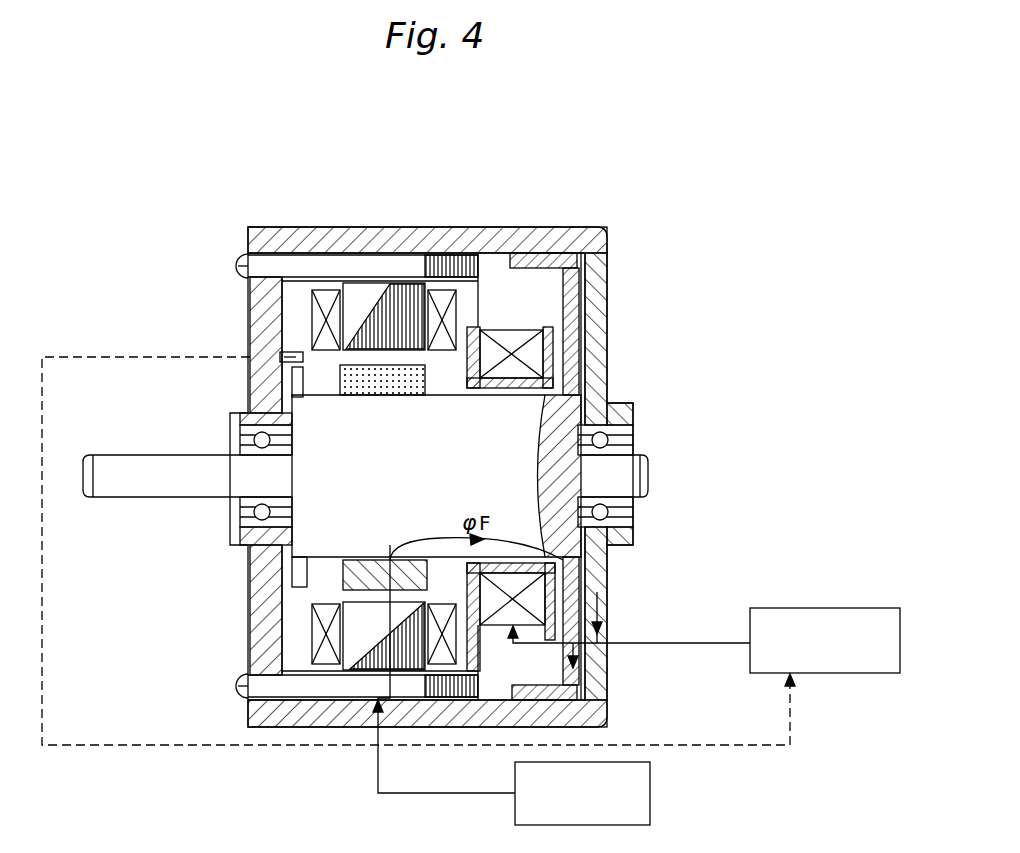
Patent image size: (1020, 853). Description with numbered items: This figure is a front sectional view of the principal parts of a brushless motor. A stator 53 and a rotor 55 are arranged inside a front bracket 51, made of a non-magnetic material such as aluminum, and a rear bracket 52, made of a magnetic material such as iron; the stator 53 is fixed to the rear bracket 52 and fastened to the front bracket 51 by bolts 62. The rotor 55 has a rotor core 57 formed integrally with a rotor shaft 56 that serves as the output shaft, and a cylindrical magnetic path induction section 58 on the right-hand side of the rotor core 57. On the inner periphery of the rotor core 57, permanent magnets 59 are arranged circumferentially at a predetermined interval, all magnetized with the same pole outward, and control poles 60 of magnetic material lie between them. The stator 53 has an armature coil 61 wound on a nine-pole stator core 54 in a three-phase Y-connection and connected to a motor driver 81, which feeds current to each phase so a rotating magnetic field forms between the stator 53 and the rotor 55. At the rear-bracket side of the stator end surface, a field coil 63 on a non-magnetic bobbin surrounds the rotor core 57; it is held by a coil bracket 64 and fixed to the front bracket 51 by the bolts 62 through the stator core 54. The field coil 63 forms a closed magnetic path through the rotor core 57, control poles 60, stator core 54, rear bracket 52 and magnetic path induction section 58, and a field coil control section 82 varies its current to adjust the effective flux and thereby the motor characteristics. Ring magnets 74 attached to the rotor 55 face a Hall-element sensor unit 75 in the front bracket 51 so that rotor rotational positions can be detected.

The front bracket 51 is at (252, 302).
The rear bracket 52 is at (496, 236).
The stator 53 is at (362, 638).
The stator core 54 is at (355, 296).
The rotor 55 is at (318, 515).
The rotor shaft 56 is at (108, 497).
The rotor core 57 is at (448, 470).
The magnetic path induction section 58 is at (557, 256).
The magnets 59 is at (363, 396).
The control poles 60 is at (368, 560).
The armature coil 61 is at (565, 283).
The bolts 62 is at (382, 270).
The field coil 63 is at (545, 352).
The coil bracket 64 is at (560, 316).
The ring magnets 74 is at (296, 382).
The sensor unit 75 is at (280, 357).
The motor driver 81 is at (652, 790).
The field coil control section 82 is at (855, 675).